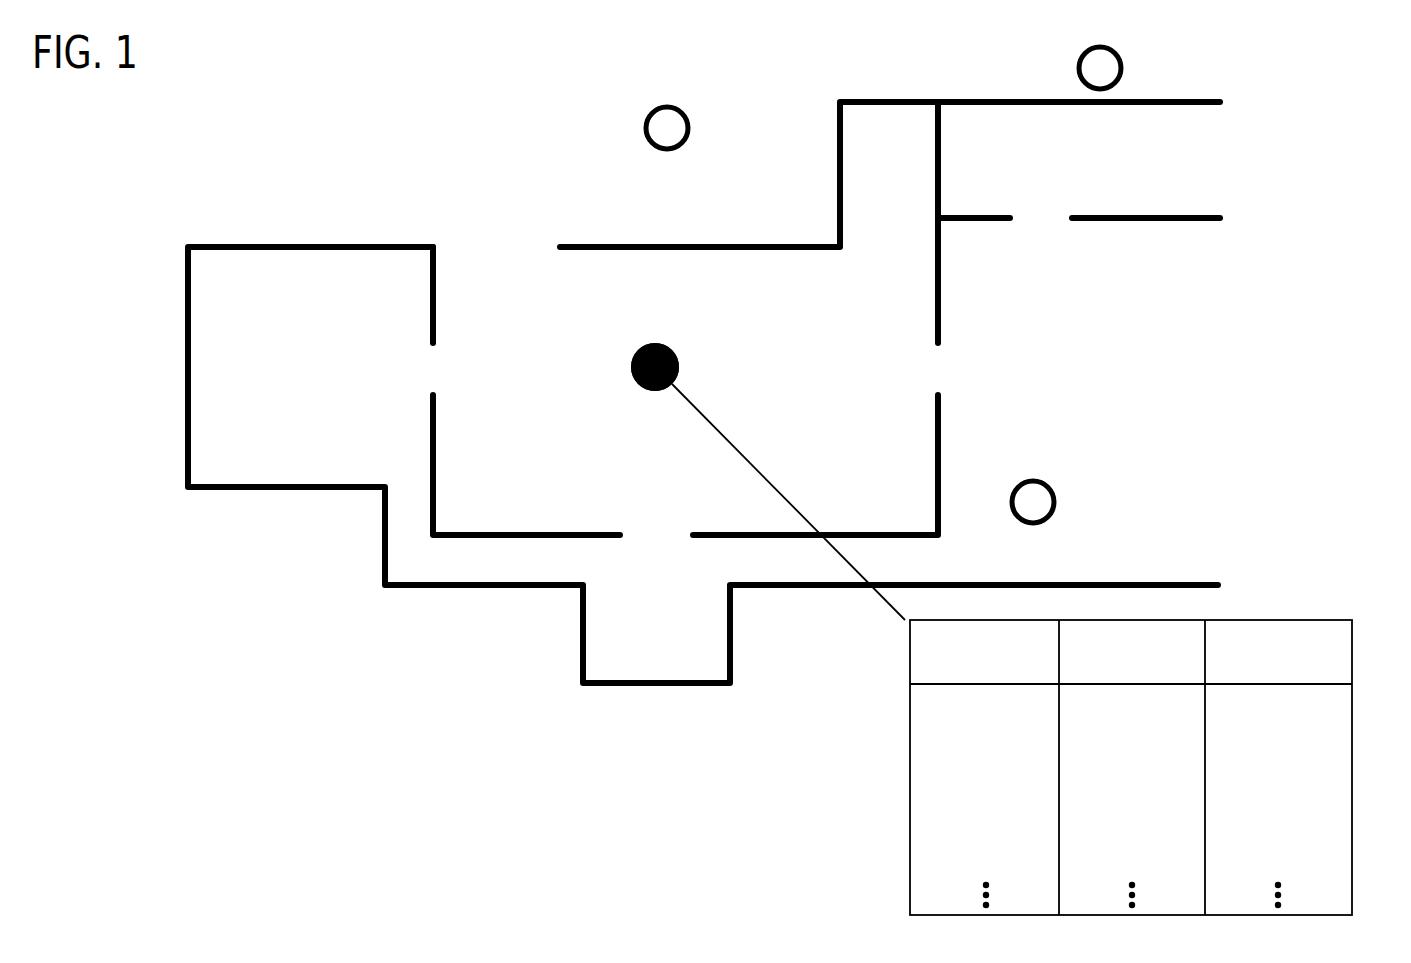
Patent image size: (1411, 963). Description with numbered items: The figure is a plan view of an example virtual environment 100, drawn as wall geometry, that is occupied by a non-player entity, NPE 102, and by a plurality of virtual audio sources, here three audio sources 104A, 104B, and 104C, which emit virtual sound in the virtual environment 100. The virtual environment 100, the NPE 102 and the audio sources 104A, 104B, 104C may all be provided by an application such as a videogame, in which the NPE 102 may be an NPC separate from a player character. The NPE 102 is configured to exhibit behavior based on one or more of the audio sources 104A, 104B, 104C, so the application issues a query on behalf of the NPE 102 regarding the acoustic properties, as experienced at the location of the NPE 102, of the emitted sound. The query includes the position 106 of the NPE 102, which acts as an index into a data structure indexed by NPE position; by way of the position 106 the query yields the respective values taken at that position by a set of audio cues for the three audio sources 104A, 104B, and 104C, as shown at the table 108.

The virtual environment 100 is at (384, 664).
The NPE 102 is at (681, 367).
The audio source 104A is at (1058, 502).
The audio source 104B is at (692, 128).
The audio source 104C is at (1124, 68).
The position 106 is at (610, 367).
The table 108 is at (1353, 620).